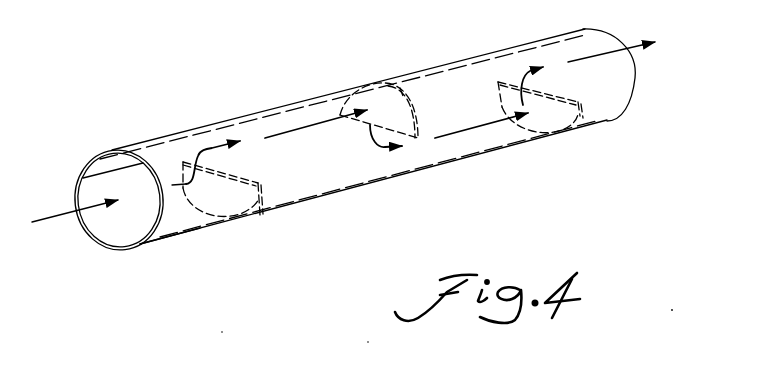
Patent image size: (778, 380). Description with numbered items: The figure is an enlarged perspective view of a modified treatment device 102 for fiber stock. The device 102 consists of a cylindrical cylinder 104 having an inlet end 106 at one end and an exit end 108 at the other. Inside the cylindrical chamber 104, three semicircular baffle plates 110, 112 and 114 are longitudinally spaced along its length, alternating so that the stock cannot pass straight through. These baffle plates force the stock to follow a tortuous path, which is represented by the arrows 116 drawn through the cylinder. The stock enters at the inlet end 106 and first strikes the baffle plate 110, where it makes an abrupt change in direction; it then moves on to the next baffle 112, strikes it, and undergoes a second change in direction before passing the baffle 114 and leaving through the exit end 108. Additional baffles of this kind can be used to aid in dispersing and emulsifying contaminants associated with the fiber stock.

The treatment device 102 is at (278, 92).
The cylindrical cylinder 104 is at (173, 219).
The inlet end 106 is at (100, 226).
The exit end 108 is at (637, 70).
The semicircular baffle plate 110 is at (262, 214).
The semicircular baffle plate 112 is at (430, 70).
The semicircular baffle plate 114 is at (578, 117).
The arrows 116 is at (245, 138).